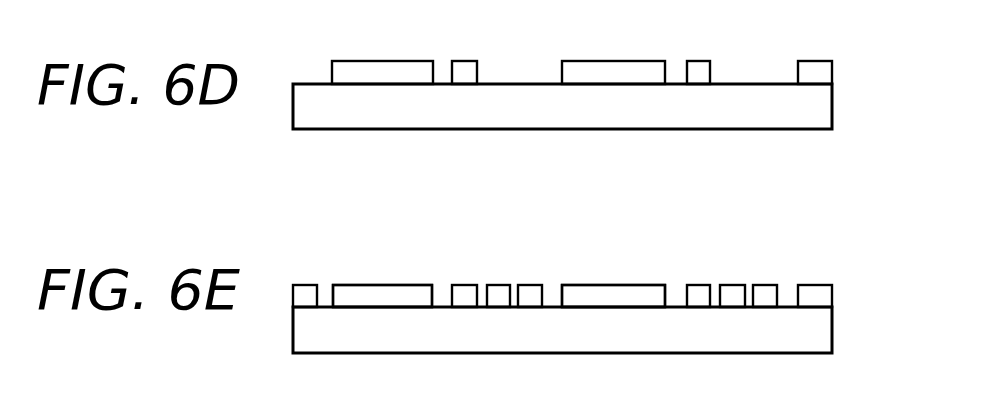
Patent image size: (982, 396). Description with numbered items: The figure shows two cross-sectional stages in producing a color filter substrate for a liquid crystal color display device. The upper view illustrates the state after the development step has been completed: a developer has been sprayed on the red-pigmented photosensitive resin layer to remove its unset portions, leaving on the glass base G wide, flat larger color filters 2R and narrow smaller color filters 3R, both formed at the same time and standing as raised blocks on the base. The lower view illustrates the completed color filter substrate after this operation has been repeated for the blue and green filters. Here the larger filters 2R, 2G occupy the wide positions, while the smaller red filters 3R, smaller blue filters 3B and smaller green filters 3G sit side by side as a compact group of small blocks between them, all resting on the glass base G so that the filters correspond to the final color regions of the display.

In FIG. 6D, the larger red color filter 2R is at (382, 67).
In FIG. 6E, the larger red color filter 2R is at (380, 290).
In FIG. 6E, the larger green color filter 2G is at (499, 296).
In FIG. 6D, the smaller red color filter 3R is at (460, 63).
In FIG. 6E, the smaller red color filter 3R is at (463, 291).
In FIG. 6E, the smaller blue color filter 3B is at (497, 291).
In FIG. 6E, the smaller green color filter 3G is at (527, 291).
In FIG. 6D, the glass base G is at (823, 103).
In FIG. 6E, the glass base G is at (823, 330).